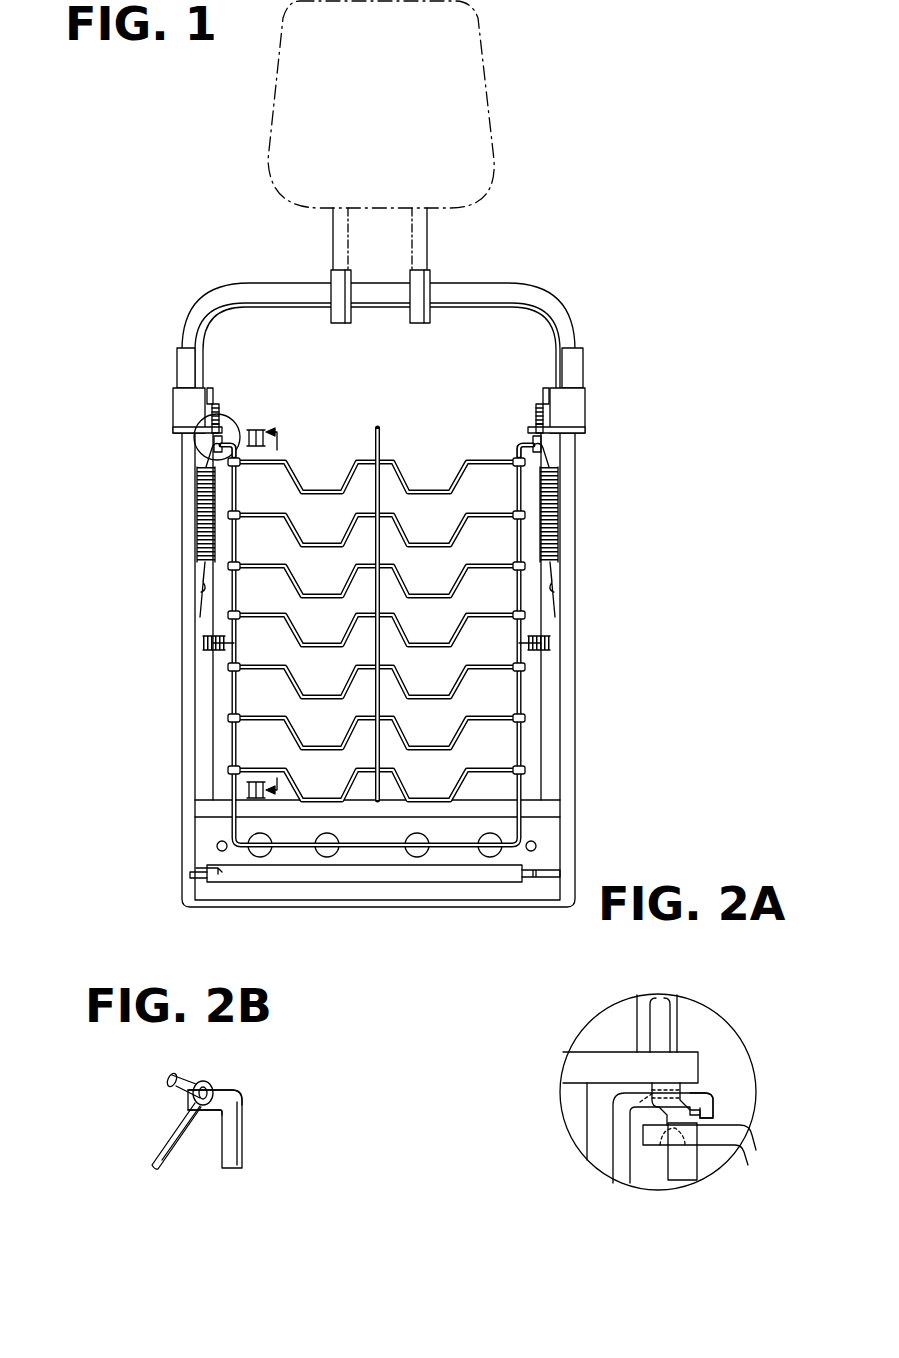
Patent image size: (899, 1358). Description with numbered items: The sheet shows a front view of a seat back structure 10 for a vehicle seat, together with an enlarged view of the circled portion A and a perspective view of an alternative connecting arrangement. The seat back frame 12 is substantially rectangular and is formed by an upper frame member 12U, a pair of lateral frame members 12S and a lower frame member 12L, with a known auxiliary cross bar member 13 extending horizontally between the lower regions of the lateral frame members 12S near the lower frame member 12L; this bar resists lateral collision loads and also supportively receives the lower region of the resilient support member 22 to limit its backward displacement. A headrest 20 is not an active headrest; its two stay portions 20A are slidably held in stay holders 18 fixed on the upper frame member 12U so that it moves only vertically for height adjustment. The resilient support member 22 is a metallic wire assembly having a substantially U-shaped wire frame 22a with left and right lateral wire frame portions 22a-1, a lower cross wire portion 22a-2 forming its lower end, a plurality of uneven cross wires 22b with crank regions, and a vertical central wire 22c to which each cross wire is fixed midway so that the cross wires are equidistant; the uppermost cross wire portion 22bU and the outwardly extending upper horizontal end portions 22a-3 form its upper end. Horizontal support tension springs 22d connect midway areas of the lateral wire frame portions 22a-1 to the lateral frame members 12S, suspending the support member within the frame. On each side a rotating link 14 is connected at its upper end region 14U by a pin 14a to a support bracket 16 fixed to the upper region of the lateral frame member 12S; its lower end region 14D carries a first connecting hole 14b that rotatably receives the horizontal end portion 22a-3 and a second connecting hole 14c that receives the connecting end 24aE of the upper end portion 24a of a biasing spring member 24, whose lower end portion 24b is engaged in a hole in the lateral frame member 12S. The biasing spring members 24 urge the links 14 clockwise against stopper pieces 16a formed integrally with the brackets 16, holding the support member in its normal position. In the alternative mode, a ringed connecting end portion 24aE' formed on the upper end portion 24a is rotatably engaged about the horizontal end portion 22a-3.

In FIG. 1, the seat back structure 10 is at (603, 230).
In FIG. 1, the seat back frame 12 is at (376, 571).
In FIG. 1, the upper frame member 12U is at (228, 300).
In FIG. 1, the lateral frame member 12S is at (186, 610).
In FIG. 1, the lower frame member 12L is at (540, 832).
In FIG. 1, the auxiliary cross bar member 13 is at (357, 820).
In FIG. 1, the rotating link 14 is at (224, 420).
In FIG. 2A, the rotating link 14 is at (718, 1022).
In FIG. 1, the upper end region 14U is at (210, 388).
In FIG. 1, the pin 14a is at (217, 400).
In FIG. 2A, the first connecting hole 14b is at (662, 1137).
In FIG. 2A, the second connecting hole 14c is at (653, 1093).
In FIG. 1, the lower end region 14D is at (542, 467).
In FIG. 2A, the lower end region 14D is at (680, 1173).
In FIG. 1, the support bracket 16 is at (186, 405).
In FIG. 2A, the support bracket 16 is at (612, 1047).
In FIG. 1, the stopper piece 16a is at (190, 430).
In FIG. 2A, the stopper piece 16a is at (668, 1068).
In FIG. 1, the stay holder 18 is at (333, 292).
In FIG. 1, the headrest 20 is at (478, 92).
In FIG. 1, the stay portion 20A is at (333, 230).
In FIG. 1, the resilient support member 22 is at (380, 671).
In FIG. 1, the wire frame 22a is at (380, 671).
In FIG. 1, the lateral wire frame portion 22a-1 is at (232, 750).
In FIG. 2B, the lateral wire frame portion 22a-1 is at (240, 1132).
In FIG. 1, the lower cross wire portion 22a-2 is at (397, 848).
In FIG. 1, the upper horizontal end portion 22a-3 is at (228, 440).
In FIG. 2A, the upper horizontal end portion 22a-3 is at (712, 1140).
In FIG. 2B, the upper horizontal end portion 22a-3 is at (223, 1090).
In FIG. 1, the uneven cross wire 22b is at (430, 528).
In FIG. 1, the uppermost cross wire portion 22bU is at (348, 472).
In FIG. 1, the vertical central wire 22c is at (378, 427).
In FIG. 1, the support tension spring 22d is at (210, 648).
In FIG. 1, the biasing spring member 24 is at (385, 531).
In FIG. 1, the upper end portion 24a is at (208, 462).
In FIG. 2A, the upper end portion 24a is at (617, 1140).
In FIG. 2B, the upper end portion 24a is at (163, 1128).
In FIG. 2A, the connecting end 24aE is at (751, 1061).
In FIG. 2B, the ringed connecting end portion 24aE' is at (204, 1141).
In FIG. 1, the lower end portion 24b is at (635, 547).
In FIG. 1, the circled portion A is at (198, 444).
In FIG. 2A, the circled portion A is at (560, 1102).